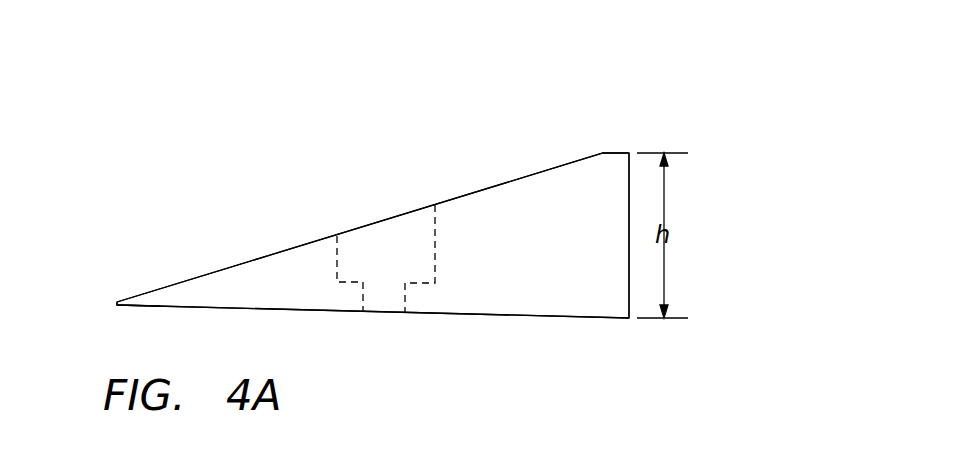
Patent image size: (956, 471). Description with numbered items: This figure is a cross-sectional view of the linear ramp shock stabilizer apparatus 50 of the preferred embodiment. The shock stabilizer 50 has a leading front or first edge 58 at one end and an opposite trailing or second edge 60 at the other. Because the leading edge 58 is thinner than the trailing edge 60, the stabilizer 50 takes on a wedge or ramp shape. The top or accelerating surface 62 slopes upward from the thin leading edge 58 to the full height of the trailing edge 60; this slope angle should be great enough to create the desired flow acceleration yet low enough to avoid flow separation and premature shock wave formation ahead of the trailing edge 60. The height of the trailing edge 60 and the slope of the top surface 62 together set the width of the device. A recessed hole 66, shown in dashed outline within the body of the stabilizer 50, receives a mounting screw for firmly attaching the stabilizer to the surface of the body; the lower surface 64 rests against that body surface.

The shock stabilizer apparatus 50 is at (540, 263).
The leading front edge 58 is at (116, 302).
The trailing edge 60 is at (630, 170).
The top or accelerating surface 62 is at (482, 190).
The bottom surface 64 is at (477, 315).
The recessed holes 66 is at (390, 252).